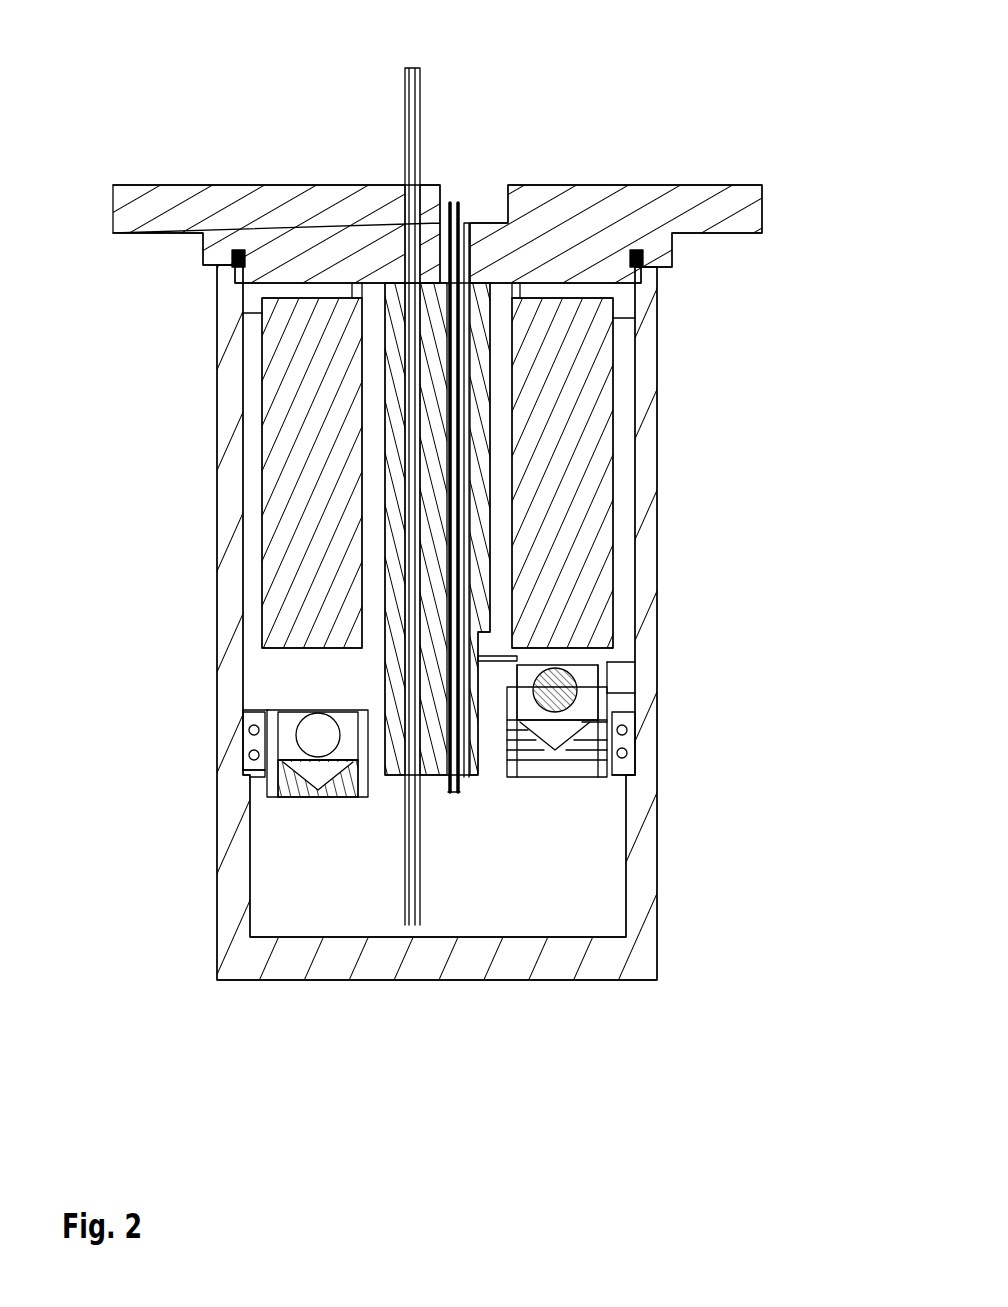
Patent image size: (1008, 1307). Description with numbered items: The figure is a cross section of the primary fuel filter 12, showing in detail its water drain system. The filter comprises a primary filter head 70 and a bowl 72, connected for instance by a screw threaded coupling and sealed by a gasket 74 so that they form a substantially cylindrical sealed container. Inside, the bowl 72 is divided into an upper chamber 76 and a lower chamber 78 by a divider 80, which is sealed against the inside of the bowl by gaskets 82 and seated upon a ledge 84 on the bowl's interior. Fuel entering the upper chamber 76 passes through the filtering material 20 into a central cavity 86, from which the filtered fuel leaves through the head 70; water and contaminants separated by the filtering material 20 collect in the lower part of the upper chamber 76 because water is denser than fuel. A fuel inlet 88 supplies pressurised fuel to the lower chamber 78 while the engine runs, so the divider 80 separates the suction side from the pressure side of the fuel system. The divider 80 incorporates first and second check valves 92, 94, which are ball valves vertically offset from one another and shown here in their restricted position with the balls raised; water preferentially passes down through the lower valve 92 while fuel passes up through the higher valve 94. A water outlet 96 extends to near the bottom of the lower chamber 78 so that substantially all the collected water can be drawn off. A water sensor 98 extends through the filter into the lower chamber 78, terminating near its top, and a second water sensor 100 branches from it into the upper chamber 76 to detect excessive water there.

The primary fuel filter 12 is at (690, 97).
The filtering material 20 is at (305, 440).
The primary filter head 70 is at (208, 200).
The bowl 72 is at (228, 533).
The gasket 74 is at (228, 262).
The upper chamber 76 is at (265, 663).
The lower chamber 78 is at (292, 880).
The divider 80 is at (243, 717).
The gaskets 82 is at (249, 729).
The ledge 84 is at (250, 770).
The central cavity 86 is at (372, 368).
The fuel inlet 88 is at (467, 224).
The first check valve 92 is at (318, 725).
The second check valve 94 is at (607, 693).
The water outlet 96 is at (405, 76).
The water sensor 98 is at (453, 203).
The second water sensor 100 is at (540, 645).